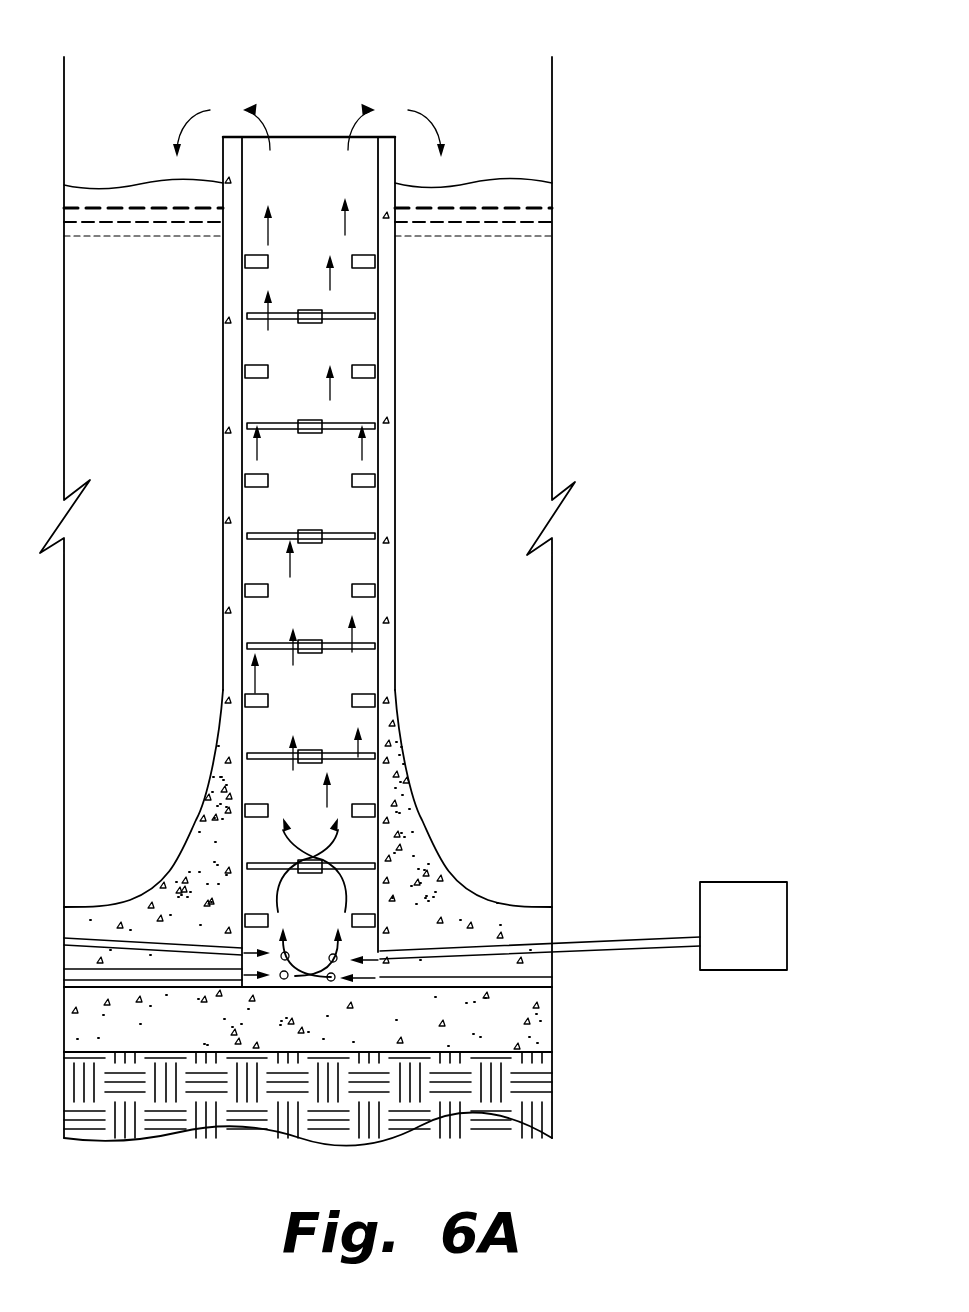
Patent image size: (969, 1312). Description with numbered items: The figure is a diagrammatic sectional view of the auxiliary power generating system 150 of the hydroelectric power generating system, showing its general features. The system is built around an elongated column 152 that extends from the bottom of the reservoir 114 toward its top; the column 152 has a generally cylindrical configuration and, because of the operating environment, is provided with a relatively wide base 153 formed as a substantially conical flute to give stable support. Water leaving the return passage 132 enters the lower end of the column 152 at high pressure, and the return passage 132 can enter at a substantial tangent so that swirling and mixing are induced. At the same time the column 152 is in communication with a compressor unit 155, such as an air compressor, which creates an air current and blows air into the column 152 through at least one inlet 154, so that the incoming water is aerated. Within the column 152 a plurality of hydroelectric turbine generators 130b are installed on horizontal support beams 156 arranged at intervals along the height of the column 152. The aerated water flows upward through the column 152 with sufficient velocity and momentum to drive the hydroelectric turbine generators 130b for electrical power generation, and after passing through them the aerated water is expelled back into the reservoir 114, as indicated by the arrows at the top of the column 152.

The reservoir 114 is at (133, 150).
The auxiliary power generating system 150 is at (312, 102).
The elongated column 152 is at (440, 393).
The hydroelectric turbine generator 130b is at (305, 420).
The horizontal support beam 156 is at (352, 536).
The base 153 is at (422, 816).
The compressor unit 155 is at (746, 882).
The inlet 154 is at (530, 946).
The return passage 132 is at (526, 986).